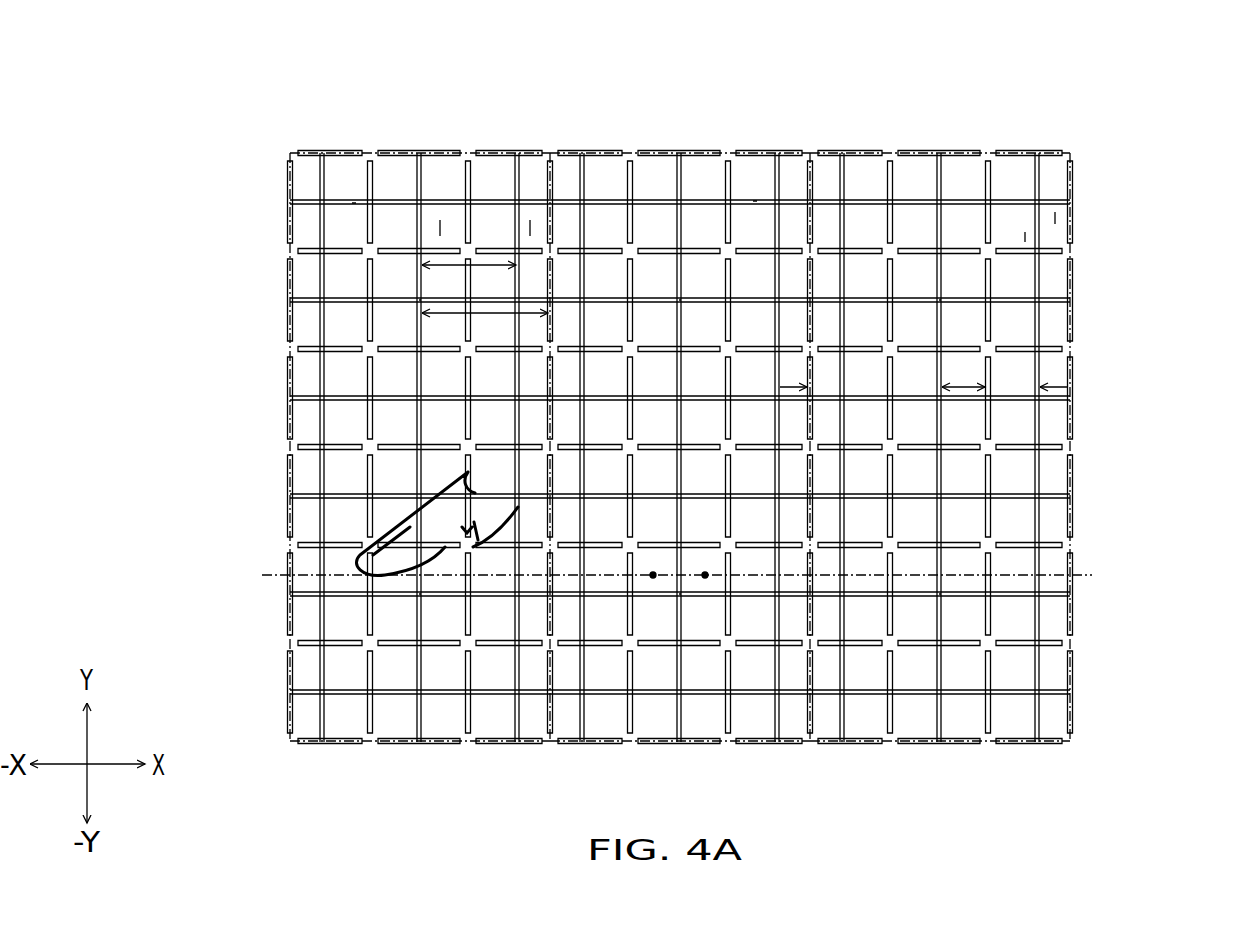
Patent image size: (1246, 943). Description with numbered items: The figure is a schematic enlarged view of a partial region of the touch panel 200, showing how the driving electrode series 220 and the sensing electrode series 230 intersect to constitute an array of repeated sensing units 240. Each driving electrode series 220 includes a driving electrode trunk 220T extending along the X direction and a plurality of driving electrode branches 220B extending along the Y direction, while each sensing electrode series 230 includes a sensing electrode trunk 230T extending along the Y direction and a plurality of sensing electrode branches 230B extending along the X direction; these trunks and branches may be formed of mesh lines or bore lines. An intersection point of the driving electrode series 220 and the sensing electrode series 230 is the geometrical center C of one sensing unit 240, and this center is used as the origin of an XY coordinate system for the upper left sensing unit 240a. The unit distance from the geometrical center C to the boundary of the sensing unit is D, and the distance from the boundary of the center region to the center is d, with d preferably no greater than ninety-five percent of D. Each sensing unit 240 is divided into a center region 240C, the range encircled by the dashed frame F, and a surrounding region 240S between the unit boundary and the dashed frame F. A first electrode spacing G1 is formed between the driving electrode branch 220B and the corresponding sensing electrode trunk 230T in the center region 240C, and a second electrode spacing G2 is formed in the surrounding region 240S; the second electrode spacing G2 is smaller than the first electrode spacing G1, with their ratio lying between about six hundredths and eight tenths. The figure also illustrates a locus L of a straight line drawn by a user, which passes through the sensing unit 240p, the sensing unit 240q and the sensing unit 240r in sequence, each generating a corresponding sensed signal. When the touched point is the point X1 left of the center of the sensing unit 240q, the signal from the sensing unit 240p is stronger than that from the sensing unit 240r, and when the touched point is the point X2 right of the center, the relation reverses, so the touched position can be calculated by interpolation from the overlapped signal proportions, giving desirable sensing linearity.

The touch panel 200 is at (1215, 805).
The driving electrode series 220 is at (168, 360).
The driving electrode trunk 220T is at (307, 297).
The driving electrode branch 220B is at (443, 347).
The sensing electrode series 230 is at (750, 76).
The sensing electrode trunk 230T is at (682, 230).
The sensing electrode branch 230B is at (657, 248).
The sensing unit 240 is at (890, 153).
The upper left sensing unit 240a is at (532, 76).
The center region 240C is at (448, 228).
The surrounding region 240S is at (535, 228).
The sensing unit 240p is at (377, 747).
The sensing unit 240q is at (633, 745).
The sensing unit 240r is at (988, 745).
The dashed frame F is at (352, 202).
The geometrical center C is at (420, 300).
The distance d is at (469, 282).
The unit distance D is at (485, 326).
The first electrode spacing G1 is at (963, 372).
The second electrode spacing G2 is at (1058, 370).
The locus L is at (1087, 574).
The point X1 is at (653, 578).
The point X2 is at (708, 577).